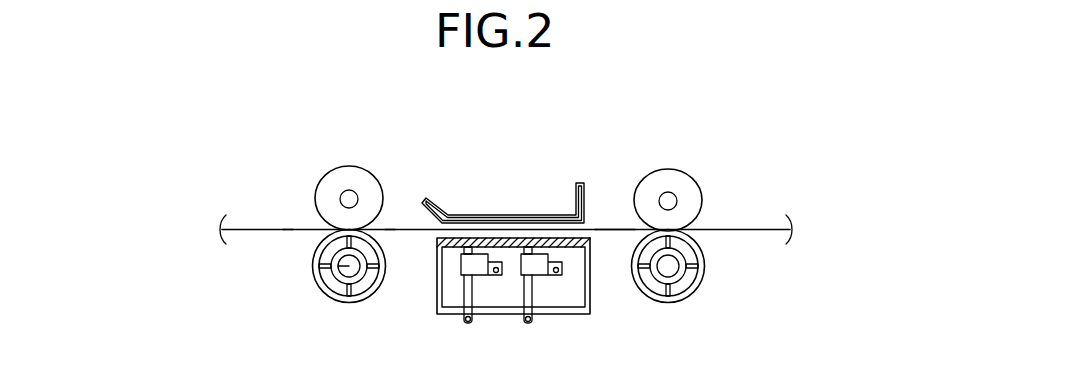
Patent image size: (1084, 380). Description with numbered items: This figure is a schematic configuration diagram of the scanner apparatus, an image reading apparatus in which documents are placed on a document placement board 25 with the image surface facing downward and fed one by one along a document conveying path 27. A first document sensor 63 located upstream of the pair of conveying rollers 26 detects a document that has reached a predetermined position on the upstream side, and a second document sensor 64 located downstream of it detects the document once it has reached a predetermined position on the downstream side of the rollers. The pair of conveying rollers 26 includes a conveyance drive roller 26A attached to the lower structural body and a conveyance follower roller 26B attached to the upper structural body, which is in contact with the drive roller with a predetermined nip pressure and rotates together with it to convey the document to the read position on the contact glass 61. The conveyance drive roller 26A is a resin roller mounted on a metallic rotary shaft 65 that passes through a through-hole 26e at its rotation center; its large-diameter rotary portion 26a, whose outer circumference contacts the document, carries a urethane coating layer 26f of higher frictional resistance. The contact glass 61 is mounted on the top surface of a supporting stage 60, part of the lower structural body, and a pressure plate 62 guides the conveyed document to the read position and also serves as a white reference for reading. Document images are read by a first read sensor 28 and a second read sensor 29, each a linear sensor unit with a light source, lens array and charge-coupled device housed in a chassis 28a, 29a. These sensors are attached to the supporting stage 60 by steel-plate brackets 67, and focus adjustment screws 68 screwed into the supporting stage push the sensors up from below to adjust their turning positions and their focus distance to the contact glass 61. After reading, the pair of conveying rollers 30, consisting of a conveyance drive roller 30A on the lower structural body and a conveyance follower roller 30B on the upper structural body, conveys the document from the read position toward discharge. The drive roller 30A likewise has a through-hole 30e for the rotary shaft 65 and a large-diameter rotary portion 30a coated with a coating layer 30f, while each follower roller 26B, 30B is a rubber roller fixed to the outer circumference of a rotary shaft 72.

The document placement board 25 is at (266, 228).
The pair of conveying rollers 26 is at (365, 131).
The conveyance drive roller 26A is at (348, 308).
The conveyance follower roller 26B is at (369, 156).
The large-diameter rotary portion 26a is at (366, 283).
The through-hole 26e is at (360, 262).
The coating layer 26f is at (336, 298).
The document conveying path 27 is at (613, 228).
The first read sensor 28 is at (475, 251).
The chassis 28a is at (490, 295).
The second read sensor 29 is at (534, 251).
The chassis 29a is at (518, 310).
The pair of conveying rollers 30 is at (724, 157).
The conveyance drive roller 30A is at (668, 311).
The conveyance follower roller 30B is at (664, 158).
The large-diameter rotary portion 30a is at (688, 283).
The through-hole 30e is at (677, 260).
The coating layer 30f is at (690, 298).
The supporting stage 60 is at (563, 315).
The contact glass 61 is at (510, 238).
The pressure plate 62 is at (438, 205).
The first document sensor 63 is at (289, 220).
The second document sensor 64 is at (390, 221).
The rotary shaft 65 is at (320, 280).
The bracket 67 is at (458, 302).
The focus adjustment screw 68 is at (467, 326).
The rotary shaft 72 is at (341, 196).